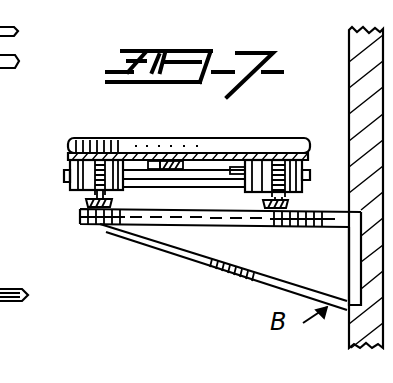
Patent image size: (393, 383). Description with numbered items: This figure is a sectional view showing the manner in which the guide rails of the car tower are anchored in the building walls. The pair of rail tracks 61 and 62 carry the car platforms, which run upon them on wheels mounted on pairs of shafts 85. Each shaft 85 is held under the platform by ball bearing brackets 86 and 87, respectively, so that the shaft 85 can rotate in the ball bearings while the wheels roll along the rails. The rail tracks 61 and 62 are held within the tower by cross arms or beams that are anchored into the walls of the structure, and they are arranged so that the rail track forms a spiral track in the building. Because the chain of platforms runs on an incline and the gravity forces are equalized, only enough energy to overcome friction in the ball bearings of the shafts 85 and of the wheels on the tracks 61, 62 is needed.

The track 61 is at (88, 201).
The track 62 is at (277, 204).
The shaft 85 is at (145, 177).
The ball bearing bracket 86 is at (66, 165).
The ball bearing bracket 87 is at (310, 153).